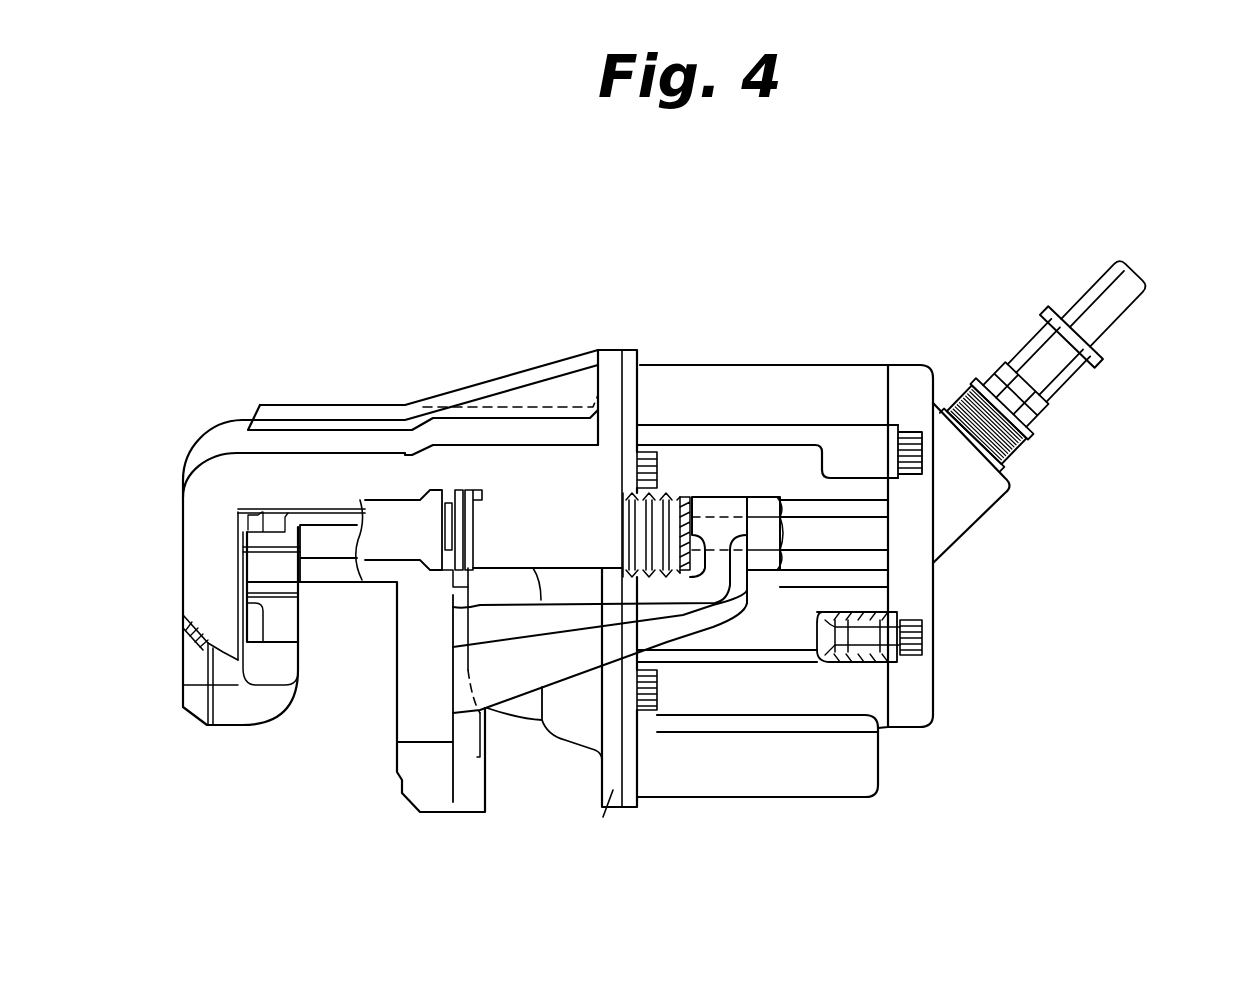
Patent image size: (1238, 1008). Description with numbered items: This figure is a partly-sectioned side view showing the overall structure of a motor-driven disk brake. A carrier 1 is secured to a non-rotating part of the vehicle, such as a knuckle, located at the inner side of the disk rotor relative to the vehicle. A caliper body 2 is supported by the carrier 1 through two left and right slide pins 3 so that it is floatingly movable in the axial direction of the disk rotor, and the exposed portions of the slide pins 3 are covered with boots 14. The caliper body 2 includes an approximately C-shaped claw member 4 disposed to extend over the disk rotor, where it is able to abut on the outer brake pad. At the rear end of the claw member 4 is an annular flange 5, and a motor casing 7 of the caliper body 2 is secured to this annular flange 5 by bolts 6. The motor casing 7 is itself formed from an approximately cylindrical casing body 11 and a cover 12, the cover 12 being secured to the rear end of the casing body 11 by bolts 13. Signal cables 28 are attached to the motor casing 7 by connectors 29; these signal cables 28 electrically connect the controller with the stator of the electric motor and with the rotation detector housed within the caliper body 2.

The carrier 1 is at (392, 770).
The caliper body 2 is at (822, 364).
The slide pins 3 is at (708, 535).
The claw member 4 is at (215, 448).
The annular flange 5 is at (603, 817).
The bolts 6 is at (645, 705).
The motor casing 7 is at (882, 364).
The casing body 11 is at (840, 772).
The cover 12 is at (917, 712).
The bolts 13 is at (910, 640).
The boots 14 is at (663, 505).
The signal cables 28 is at (1103, 305).
The connectors 29 is at (1027, 440).